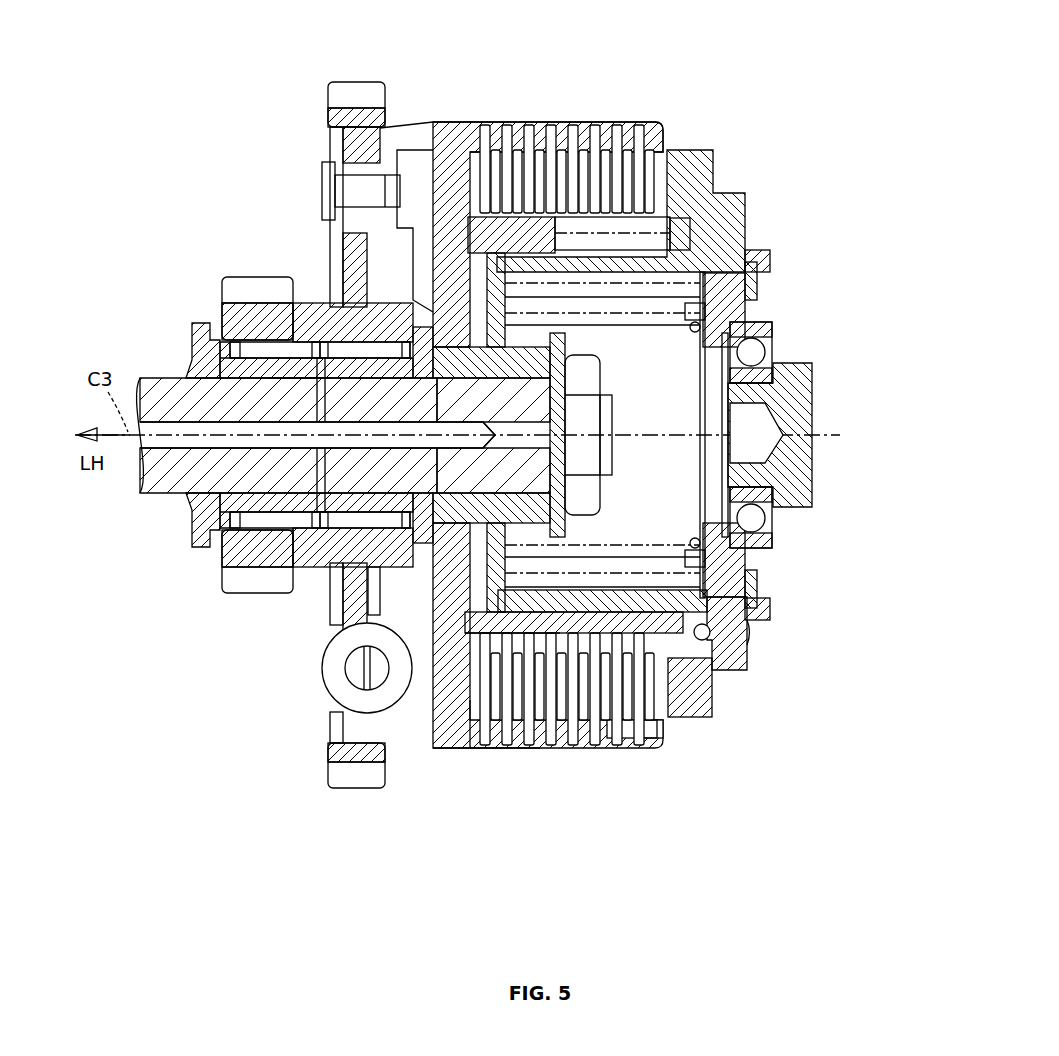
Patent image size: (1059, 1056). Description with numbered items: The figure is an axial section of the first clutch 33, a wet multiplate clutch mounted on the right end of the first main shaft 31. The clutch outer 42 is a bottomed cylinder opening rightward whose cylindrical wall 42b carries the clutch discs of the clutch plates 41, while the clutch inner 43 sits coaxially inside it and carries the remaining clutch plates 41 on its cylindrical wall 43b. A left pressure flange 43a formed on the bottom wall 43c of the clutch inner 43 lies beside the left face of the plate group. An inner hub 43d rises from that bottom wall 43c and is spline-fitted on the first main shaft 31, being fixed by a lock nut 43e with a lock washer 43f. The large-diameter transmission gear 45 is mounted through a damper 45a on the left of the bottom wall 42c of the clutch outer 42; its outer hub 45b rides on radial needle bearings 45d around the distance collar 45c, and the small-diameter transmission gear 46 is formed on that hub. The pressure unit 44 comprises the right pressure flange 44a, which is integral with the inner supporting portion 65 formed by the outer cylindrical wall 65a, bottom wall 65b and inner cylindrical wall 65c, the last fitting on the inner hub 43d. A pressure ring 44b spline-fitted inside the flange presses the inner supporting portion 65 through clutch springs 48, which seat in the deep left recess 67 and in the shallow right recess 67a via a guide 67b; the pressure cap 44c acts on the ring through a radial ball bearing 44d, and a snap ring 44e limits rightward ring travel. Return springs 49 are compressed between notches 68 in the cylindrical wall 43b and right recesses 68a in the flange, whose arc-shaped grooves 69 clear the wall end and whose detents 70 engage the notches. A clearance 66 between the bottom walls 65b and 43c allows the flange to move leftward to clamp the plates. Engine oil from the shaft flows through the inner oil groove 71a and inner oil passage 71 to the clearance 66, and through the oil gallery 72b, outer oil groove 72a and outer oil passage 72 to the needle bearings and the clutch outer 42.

The first clutch 33 is at (716, 78).
The first main shaft 31 is at (165, 375).
The clutch plates 41 is at (520, 160).
The clutch outer 42 is at (538, 746).
The cylindrical wall 42b is at (490, 748).
The bottom wall 42c is at (332, 592).
The clutch inner 43 is at (680, 656).
The left pressure flange 43a is at (462, 748).
The cylindrical wall 43b is at (525, 750).
The bottom wall 43c is at (352, 636).
The inner hub 43d is at (447, 490).
The lock nut 43e is at (598, 388).
The lock washer 43f is at (566, 348).
The pressure unit 44 is at (752, 645).
The right pressure flange 44a is at (700, 698).
The pressure ring 44b is at (728, 322).
The pressure cap 44c is at (795, 506).
The radial ball bearing 44d is at (763, 345).
The snap ring 44e is at (758, 290).
The large-diameter transmission gear 45 is at (358, 95).
The damper 45a is at (330, 672).
The outer hub 45b is at (340, 302).
The distance collar 45c is at (262, 348).
The radial needle bearings 45d is at (292, 338).
The small-diameter transmission gear 46 is at (247, 290).
The clutch spring 48 is at (638, 540).
The return spring 49 is at (598, 253).
The inner supporting portion 65 is at (585, 612).
The outer cylindrical wall 65a is at (592, 700).
The bottom wall 65b is at (250, 592).
The inner cylindrical wall 65c is at (505, 500).
The clearance 66 is at (433, 583).
The left recess 67 is at (500, 558).
The right recess 67a is at (699, 556).
The guide 67b is at (690, 548).
The notch 68 is at (562, 255).
The right recess 68a is at (676, 252).
The arc-shaped groove 69 is at (750, 645).
The detent 70 is at (710, 642).
The inner oil passage 71 is at (458, 427).
The inner oil groove 71a is at (482, 437).
The outer oil passage 72 is at (386, 372).
The outer oil groove 72a is at (323, 382).
The oil gallery 72b is at (297, 388).